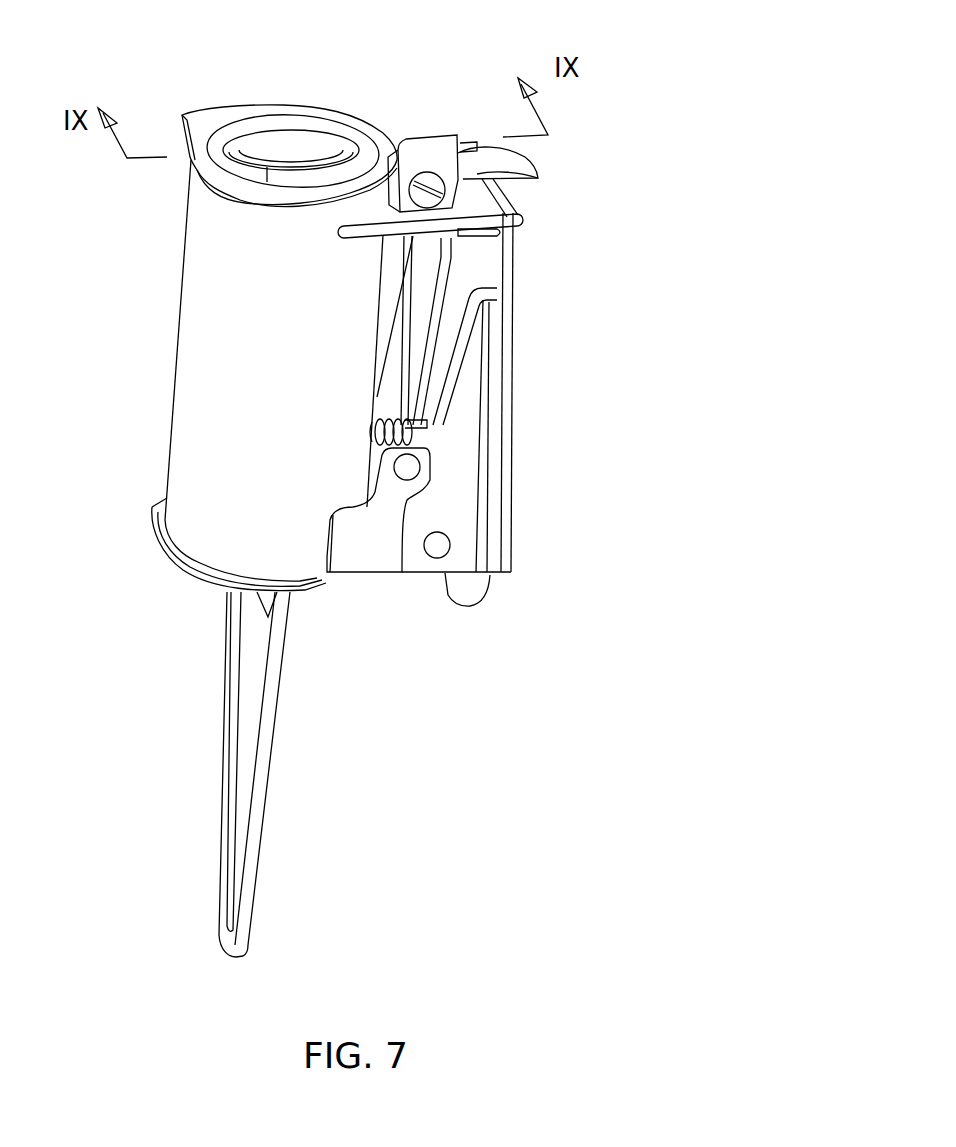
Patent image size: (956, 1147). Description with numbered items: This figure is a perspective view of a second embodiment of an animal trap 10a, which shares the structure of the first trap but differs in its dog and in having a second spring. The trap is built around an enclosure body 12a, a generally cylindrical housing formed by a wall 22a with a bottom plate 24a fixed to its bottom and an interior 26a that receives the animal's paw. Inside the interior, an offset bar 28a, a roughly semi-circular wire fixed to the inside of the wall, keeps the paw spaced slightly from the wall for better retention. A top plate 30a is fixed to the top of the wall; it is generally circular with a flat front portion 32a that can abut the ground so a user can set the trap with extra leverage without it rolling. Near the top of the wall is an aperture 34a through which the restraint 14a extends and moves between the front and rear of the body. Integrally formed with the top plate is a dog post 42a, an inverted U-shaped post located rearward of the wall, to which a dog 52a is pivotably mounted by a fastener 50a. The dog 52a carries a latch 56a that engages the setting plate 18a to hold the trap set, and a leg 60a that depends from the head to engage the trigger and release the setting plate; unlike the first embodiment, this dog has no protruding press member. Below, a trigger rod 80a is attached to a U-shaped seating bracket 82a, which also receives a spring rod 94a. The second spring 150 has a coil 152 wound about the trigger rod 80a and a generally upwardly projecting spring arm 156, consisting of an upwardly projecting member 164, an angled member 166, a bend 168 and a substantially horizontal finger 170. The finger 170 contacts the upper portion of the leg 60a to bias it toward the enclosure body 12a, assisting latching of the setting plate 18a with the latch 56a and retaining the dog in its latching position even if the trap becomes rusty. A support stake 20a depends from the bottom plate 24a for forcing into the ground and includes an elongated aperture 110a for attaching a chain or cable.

The animal trap 10a is at (447, 697).
The enclosure body 12a is at (267, 518).
The restraint 14a is at (508, 220).
The setting plate 18a is at (453, 281).
The stake 20a is at (253, 717).
The wall 22a is at (297, 429).
The bottom plate 24a is at (203, 585).
The interior 26a is at (257, 170).
The offset bar 28a is at (293, 180).
The top plate 30a is at (203, 127).
The flat front portion 32a is at (233, 185).
The aperture 34a is at (341, 240).
The dog post 42a is at (441, 133).
The fastener 50a is at (428, 183).
The dog 52a is at (503, 167).
The latch 56a is at (523, 175).
The leg 60a is at (423, 273).
The trigger rod 80a is at (407, 467).
The seating bracket 82a is at (378, 548).
The spring rod 94a is at (437, 545).
The elongated aperture 110a is at (235, 796).
The second spring 150 is at (420, 436).
The coil 152 is at (422, 423).
The spring arm 156 is at (437, 321).
The upwardly projecting member 164 is at (415, 390).
The angled member 166 is at (427, 345).
The bend 168 is at (457, 262).
The finger 170 is at (460, 245).